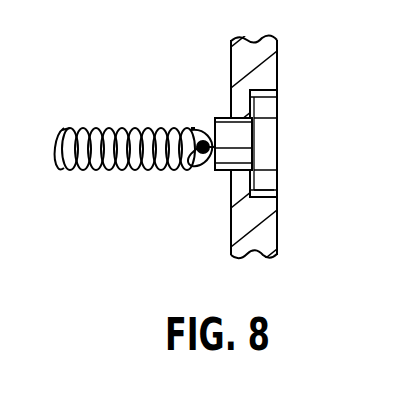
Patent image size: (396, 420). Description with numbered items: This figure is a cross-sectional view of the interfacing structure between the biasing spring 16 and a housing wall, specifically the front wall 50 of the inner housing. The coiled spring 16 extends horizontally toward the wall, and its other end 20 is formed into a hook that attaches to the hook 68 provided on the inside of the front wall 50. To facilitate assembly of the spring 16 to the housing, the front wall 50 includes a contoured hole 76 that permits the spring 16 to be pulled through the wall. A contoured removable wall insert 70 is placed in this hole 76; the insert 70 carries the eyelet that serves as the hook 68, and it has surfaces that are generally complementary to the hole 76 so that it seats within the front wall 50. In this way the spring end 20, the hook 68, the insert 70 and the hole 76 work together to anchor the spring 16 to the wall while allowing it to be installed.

The spring 16 is at (110, 127).
The other end 20 is at (203, 163).
The front wall 50 is at (278, 60).
The hook 68 is at (206, 125).
The contoured removable wall insert 70 is at (268, 138).
The contoured hole 76 is at (260, 198).